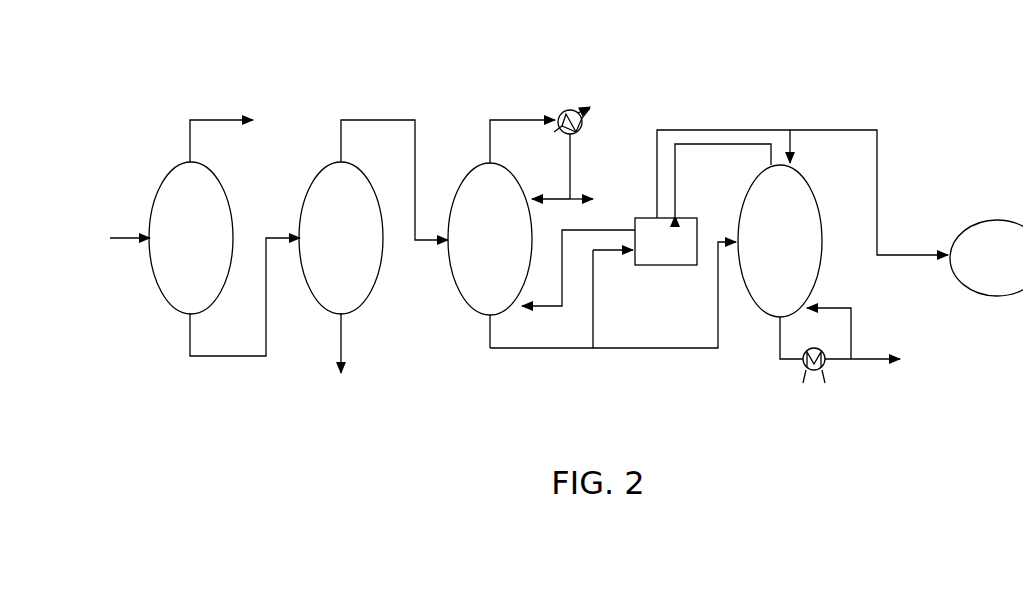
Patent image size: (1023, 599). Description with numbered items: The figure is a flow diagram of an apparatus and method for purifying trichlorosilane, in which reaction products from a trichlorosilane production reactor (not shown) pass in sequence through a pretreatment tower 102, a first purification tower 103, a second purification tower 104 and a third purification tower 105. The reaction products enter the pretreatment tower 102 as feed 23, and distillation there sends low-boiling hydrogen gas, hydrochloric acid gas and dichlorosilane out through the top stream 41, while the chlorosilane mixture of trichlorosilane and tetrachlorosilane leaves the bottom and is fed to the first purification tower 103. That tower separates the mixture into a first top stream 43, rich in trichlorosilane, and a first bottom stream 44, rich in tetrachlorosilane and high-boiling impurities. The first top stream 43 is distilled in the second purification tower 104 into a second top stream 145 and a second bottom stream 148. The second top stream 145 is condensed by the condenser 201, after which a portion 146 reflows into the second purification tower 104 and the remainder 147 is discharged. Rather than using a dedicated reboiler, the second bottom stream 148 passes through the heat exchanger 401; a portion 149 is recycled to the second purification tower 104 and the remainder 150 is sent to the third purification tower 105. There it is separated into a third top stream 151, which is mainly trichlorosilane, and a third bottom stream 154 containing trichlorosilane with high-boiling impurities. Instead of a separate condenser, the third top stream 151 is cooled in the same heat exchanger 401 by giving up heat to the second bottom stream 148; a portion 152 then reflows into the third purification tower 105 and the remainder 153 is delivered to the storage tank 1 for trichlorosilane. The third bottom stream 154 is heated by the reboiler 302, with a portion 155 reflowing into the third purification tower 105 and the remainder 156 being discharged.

The storage tank 1 is at (986, 258).
The feed stream 23 is at (125, 224).
The top stream of the pretreatment tower 41 is at (216, 120).
The first top stream 43 is at (371, 120).
The first bottom stream 44 is at (341, 343).
The pretreatment tower 102 is at (191, 238).
The first purification tower 103 is at (341, 238).
The second purification tower 104 is at (490, 239).
The third purification tower 105 is at (780, 241).
The second top stream 145 is at (516, 120).
The portion of the second top stream 146 is at (548, 199).
The remainder of the second top stream 147 is at (600, 197).
The second bottom stream 148 is at (490, 335).
The portion of the second bottom stream 149 is at (562, 230).
The remainder of the second bottom stream 150 is at (660, 348).
The third top stream 151 is at (677, 175).
The portion of the third top stream 152 is at (792, 148).
The remainder of the third top stream 153 is at (822, 130).
The third bottom stream 154 is at (778, 345).
The portion of the third bottom stream 155 is at (852, 335).
The remainder of the third bottom stream 156 is at (900, 360).
The condenser 201 is at (572, 110).
The reboiler 302 is at (826, 367).
The heat exchanger 401 is at (666, 241).